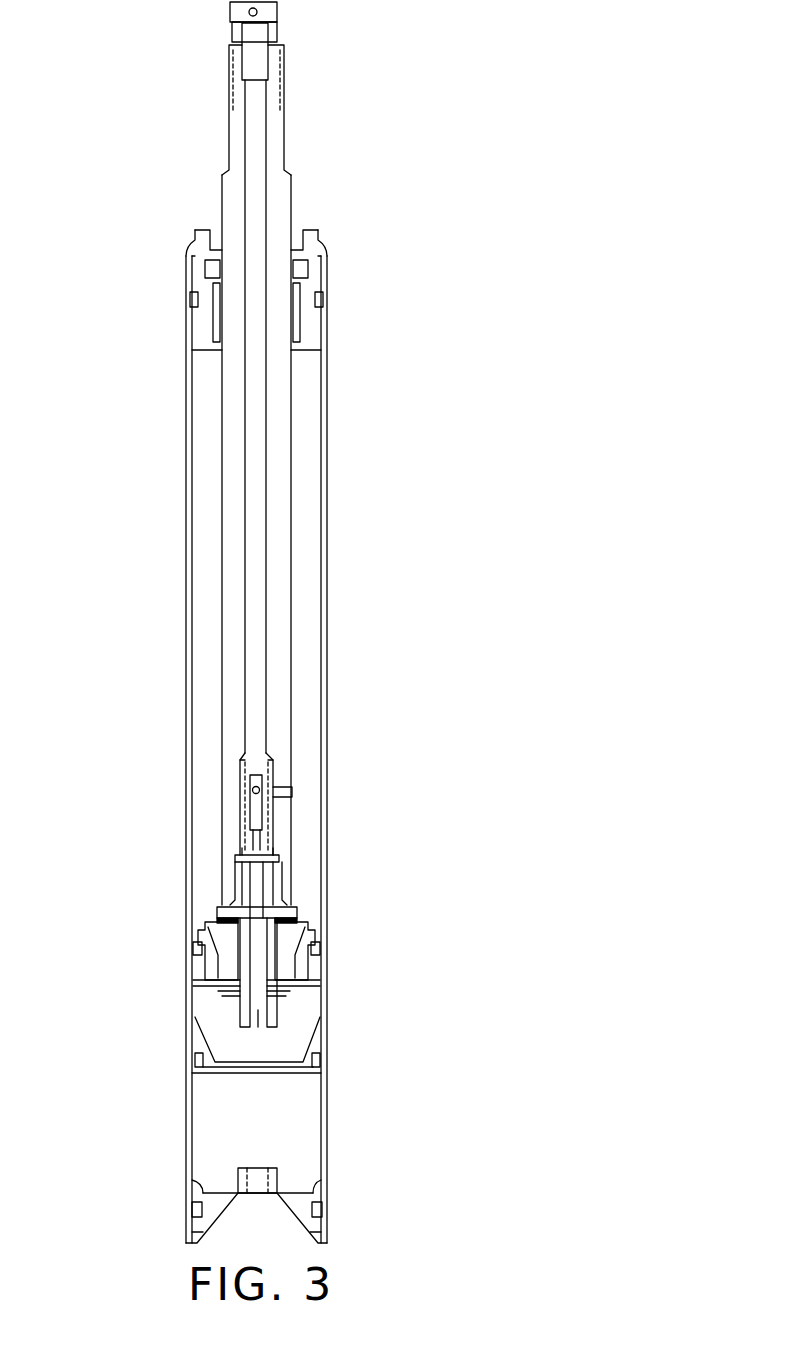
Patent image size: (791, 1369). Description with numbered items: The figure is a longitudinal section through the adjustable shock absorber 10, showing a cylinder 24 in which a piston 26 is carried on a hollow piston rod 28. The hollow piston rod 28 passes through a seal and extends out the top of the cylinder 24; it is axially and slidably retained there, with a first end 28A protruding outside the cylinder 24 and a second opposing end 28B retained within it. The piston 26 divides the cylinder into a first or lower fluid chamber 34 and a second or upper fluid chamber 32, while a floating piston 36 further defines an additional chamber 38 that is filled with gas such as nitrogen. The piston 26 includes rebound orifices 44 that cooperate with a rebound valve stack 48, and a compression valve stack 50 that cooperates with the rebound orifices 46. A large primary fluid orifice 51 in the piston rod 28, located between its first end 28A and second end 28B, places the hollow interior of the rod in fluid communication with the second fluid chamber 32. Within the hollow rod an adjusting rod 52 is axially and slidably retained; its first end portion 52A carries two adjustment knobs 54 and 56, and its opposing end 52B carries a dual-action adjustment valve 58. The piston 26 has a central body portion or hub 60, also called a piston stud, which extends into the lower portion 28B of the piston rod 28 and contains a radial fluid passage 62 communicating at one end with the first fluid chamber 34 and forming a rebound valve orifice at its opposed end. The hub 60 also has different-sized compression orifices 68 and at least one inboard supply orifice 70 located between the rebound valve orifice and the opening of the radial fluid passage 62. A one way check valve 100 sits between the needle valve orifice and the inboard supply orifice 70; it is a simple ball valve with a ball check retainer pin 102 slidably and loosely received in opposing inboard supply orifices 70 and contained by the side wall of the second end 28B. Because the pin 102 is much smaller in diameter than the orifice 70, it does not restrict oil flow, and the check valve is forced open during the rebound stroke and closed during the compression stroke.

The shock absorber 10 is at (118, 661).
The cylinder 24 is at (185, 543).
The piston 26 is at (187, 960).
The hollow piston rod 28 is at (228, 440).
The first end of piston rod 28A is at (231, 113).
The second end of piston rod 28B is at (227, 878).
The second fluid chamber 32 is at (310, 690).
The first fluid chamber 34 is at (312, 1005).
The floating piston 36 is at (312, 1077).
The additional chamber 38 is at (313, 1150).
The rebound orifices 44 is at (207, 933).
The rebound orifices 46 is at (305, 973).
The rebound valve stack 48 is at (312, 1000).
The compression valve stack 50 is at (212, 913).
The primary fluid orifice 51 is at (290, 790).
The adjusting rod 52 is at (262, 488).
The first end portion of adjusting rod 52A is at (260, 92).
The opposing end of adjusting rod 52B is at (267, 732).
The adjustment knob 54 is at (277, 34).
The adjustment knob 56 is at (228, 10).
The dual-action adjustment valve 58 is at (236, 800).
The central body portion or hub 60 is at (268, 878).
The radial fluid passage 62 is at (256, 1018).
The compression orifices 68 is at (272, 806).
The inboard supply orifice 70 is at (240, 848).
The one way check valve 100 is at (268, 840).
The ball check retainer pin 102 is at (240, 856).